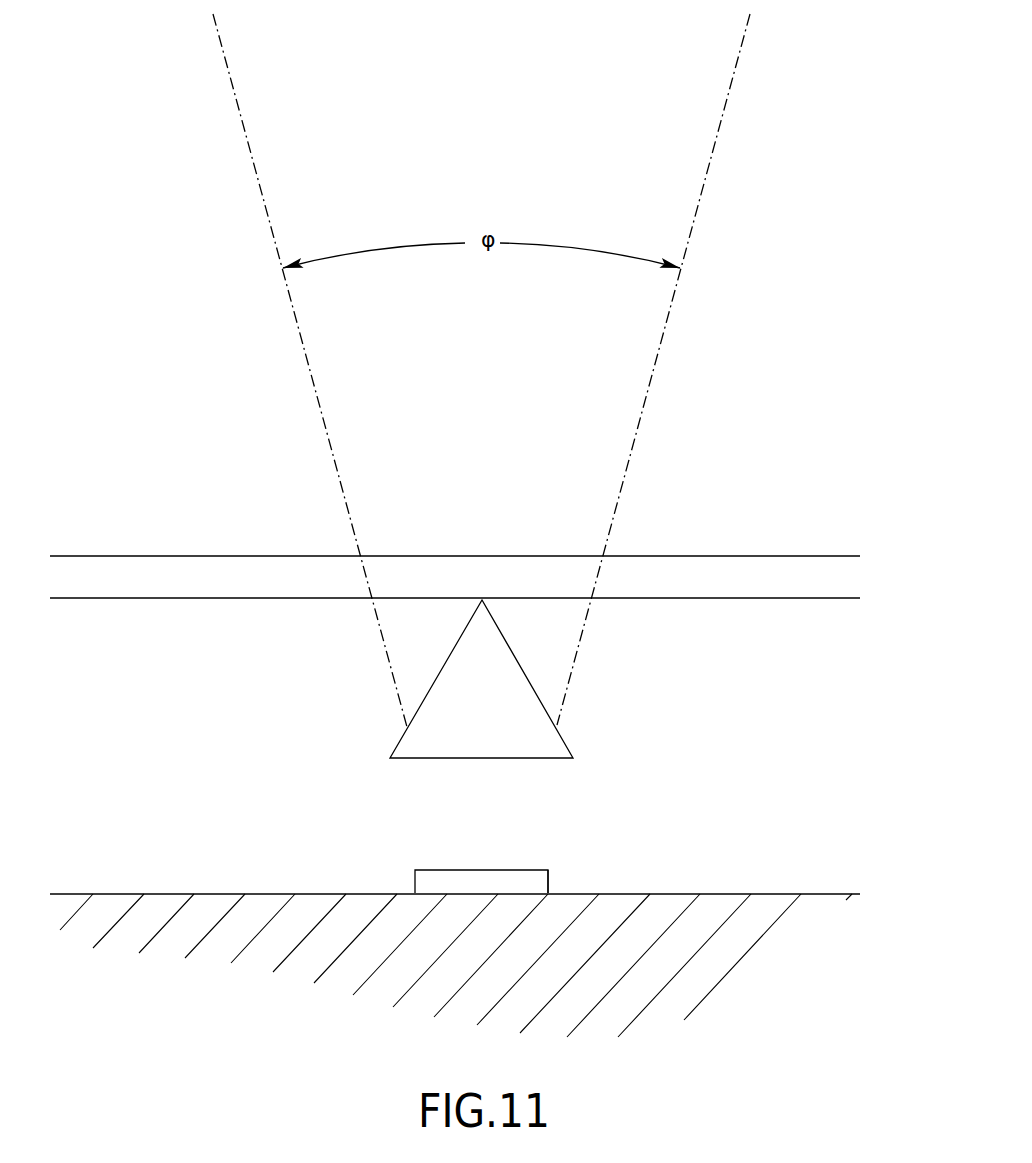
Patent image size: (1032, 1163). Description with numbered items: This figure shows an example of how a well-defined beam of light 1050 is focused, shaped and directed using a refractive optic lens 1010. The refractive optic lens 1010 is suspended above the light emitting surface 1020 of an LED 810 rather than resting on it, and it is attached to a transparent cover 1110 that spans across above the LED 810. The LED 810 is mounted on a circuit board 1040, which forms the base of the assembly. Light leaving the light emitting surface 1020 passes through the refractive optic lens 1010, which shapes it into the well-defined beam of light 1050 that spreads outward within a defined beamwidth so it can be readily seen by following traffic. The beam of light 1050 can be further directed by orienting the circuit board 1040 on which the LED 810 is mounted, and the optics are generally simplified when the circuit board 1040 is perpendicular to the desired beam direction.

The well-defined beam of light 1050 is at (658, 353).
The transparent cover 1110 is at (733, 600).
The refractive optic lens 1010 is at (558, 725).
The light emitting surface 1020 is at (450, 870).
The LED 810 is at (547, 880).
The circuit board 1040 is at (690, 978).